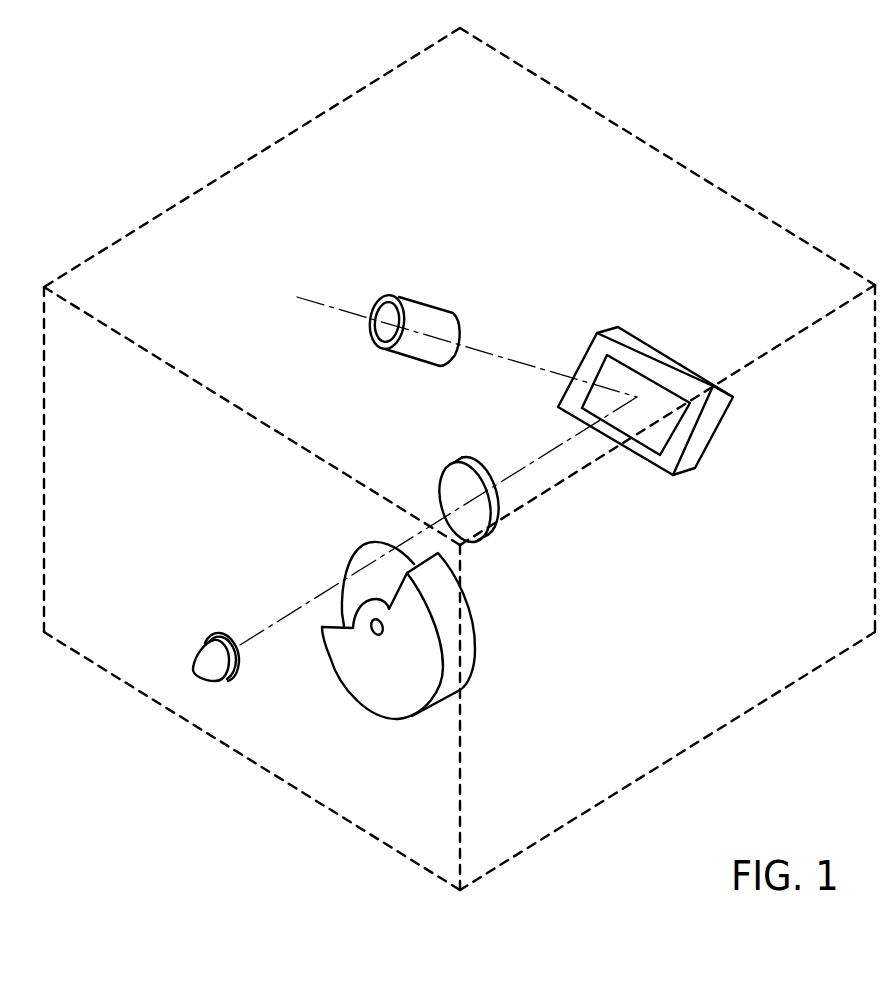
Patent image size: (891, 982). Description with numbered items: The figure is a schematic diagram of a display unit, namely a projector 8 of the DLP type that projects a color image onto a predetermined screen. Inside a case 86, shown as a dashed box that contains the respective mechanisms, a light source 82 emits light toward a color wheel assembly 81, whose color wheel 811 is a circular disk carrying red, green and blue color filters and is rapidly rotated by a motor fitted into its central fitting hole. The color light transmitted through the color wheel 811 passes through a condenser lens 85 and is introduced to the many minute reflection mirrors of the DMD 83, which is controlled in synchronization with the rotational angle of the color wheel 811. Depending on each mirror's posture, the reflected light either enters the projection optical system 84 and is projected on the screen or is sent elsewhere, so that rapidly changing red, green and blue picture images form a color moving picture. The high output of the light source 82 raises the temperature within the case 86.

The projector 8 is at (90, 91).
The color wheel assembly 81 is at (358, 633).
The color wheel 811 is at (368, 542).
The light source 82 is at (202, 638).
The DMD 83 is at (655, 353).
The projection optical system 84 is at (415, 300).
The condenser lens 85 is at (452, 465).
The case 86 is at (748, 700).